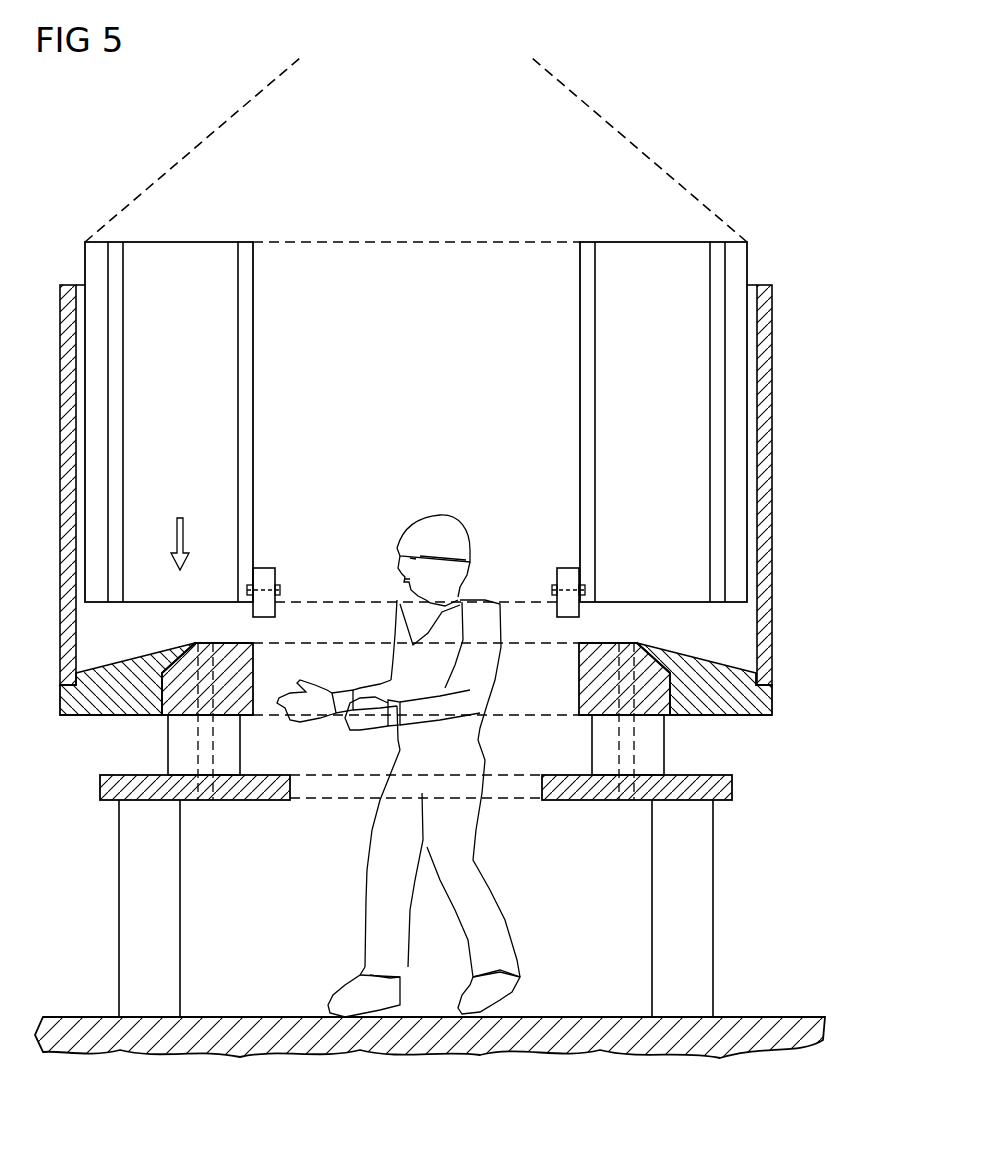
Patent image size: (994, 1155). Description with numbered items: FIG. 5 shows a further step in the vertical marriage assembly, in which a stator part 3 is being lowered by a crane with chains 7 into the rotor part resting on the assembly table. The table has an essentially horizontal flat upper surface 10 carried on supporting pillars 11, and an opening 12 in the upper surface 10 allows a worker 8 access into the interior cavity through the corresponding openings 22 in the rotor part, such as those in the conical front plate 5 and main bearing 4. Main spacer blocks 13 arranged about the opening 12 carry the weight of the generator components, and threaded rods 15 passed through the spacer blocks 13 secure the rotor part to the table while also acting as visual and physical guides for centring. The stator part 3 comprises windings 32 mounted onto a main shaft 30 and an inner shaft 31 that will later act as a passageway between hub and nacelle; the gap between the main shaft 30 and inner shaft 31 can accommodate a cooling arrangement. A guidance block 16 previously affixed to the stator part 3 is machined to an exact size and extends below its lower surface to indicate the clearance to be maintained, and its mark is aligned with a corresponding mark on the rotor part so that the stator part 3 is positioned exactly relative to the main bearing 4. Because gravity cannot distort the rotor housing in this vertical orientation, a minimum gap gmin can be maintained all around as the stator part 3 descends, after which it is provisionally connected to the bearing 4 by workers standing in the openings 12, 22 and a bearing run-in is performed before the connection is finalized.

The stator part 3 is at (258, 517).
The main bearing 4 is at (243, 680).
The conical front plate 5 is at (137, 665).
The chains 7 is at (250, 100).
The worker 8 is at (468, 563).
The upper surface 10 is at (725, 785).
The supporting pillars 11 is at (128, 940).
The opening 12 is at (507, 792).
The main spacer blocks 13 is at (168, 750).
The threaded rods 15 is at (203, 749).
The guidance block 16 is at (277, 577).
The openings 22 is at (528, 713).
The main shaft 30 is at (122, 341).
The inner shaft 31 is at (248, 341).
The windings 32 is at (97, 250).
The minimum gap gmin is at (752, 362).